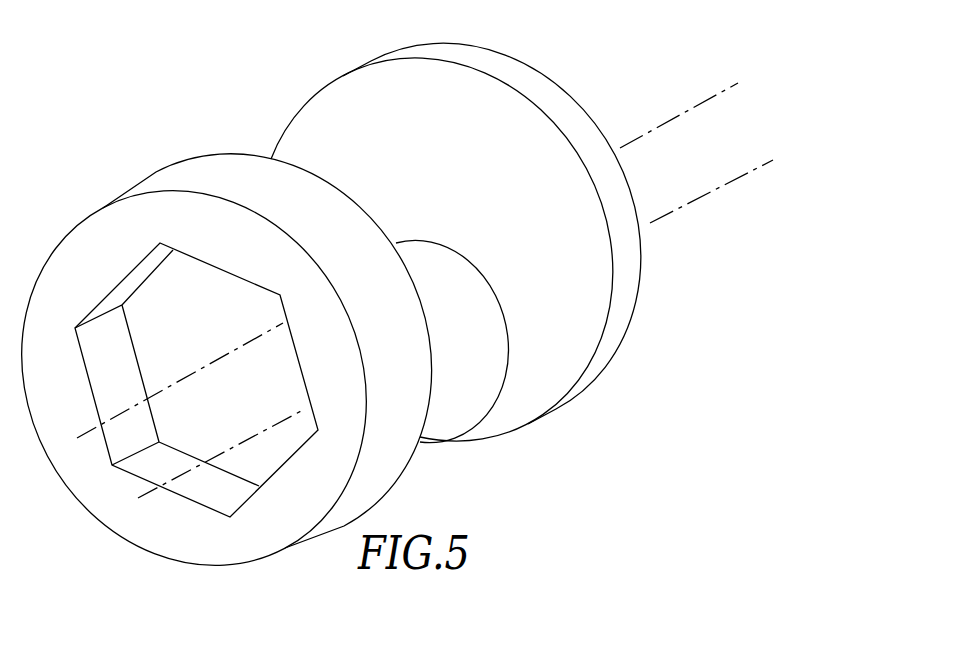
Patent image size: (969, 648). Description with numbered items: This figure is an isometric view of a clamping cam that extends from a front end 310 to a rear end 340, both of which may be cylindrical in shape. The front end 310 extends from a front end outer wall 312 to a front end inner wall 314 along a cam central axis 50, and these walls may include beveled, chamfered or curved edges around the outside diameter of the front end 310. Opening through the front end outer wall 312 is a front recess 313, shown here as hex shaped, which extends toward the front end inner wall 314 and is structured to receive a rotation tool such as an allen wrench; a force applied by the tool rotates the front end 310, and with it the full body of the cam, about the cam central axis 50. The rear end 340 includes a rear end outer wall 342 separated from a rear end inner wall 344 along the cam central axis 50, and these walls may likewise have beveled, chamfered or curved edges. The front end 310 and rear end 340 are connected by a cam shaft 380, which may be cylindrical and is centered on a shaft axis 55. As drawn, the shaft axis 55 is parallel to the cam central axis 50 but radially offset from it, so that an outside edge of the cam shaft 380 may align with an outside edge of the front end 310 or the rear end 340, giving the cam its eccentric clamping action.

The front end 310 is at (386, 316).
The front end outer wall 312 is at (140, 513).
The front recess 313 is at (218, 339).
The front end inner wall 314 is at (237, 155).
The rear end 340 is at (494, 223).
The rear end outer wall 342 is at (630, 183).
The rear end inner wall 344 is at (382, 87).
The cam shaft 380 is at (460, 436).
The cam central axis 50 is at (89, 423).
The shaft axis 55 is at (267, 431).